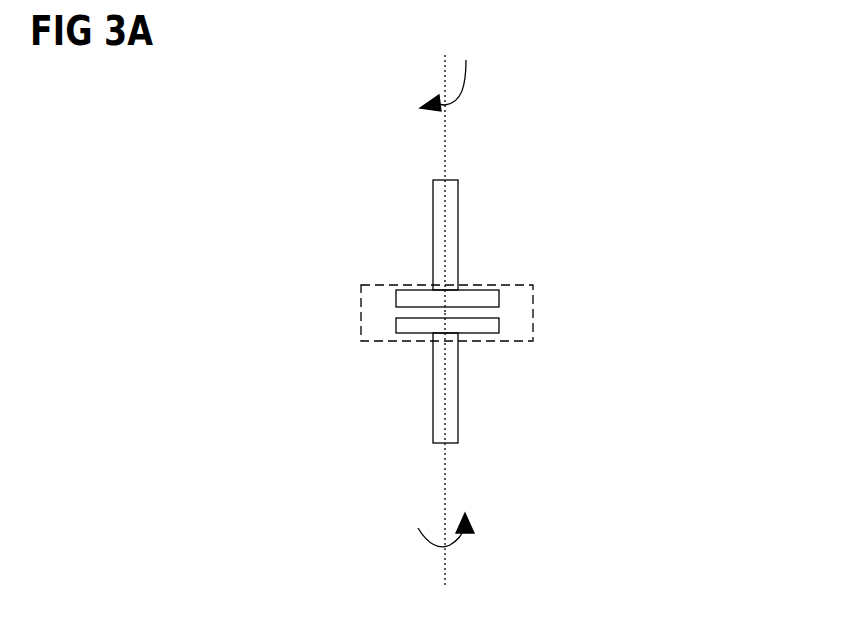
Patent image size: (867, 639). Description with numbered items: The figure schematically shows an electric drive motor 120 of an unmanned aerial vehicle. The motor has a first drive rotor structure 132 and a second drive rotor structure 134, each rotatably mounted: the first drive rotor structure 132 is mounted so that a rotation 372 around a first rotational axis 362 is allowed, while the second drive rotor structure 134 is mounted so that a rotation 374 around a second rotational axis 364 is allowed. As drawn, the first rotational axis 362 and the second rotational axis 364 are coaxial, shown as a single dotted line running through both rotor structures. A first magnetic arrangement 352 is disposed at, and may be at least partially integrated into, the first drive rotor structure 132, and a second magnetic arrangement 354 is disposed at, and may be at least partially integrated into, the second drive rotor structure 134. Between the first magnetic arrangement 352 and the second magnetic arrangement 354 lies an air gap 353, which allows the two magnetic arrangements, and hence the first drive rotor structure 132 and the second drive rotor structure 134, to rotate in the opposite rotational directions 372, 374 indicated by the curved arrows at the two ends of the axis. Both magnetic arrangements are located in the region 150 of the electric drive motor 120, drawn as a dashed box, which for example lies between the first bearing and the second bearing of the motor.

The electric drive motor 120 is at (639, 137).
The first drive rotor structure 132 is at (455, 214).
The second drive rotor structure 134 is at (453, 417).
The region 150 is at (542, 315).
The first magnetic arrangement 352 is at (392, 295).
The air gap 353 is at (475, 310).
The second magnetic arrangement 354 is at (392, 326).
The first rotational axis 362 is at (450, 159).
The second rotational axis 364 is at (450, 470).
The rotational direction 372 is at (472, 83).
The rotational direction 374 is at (468, 541).